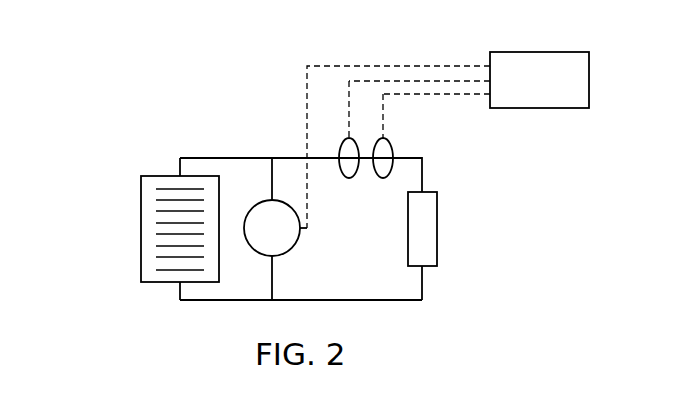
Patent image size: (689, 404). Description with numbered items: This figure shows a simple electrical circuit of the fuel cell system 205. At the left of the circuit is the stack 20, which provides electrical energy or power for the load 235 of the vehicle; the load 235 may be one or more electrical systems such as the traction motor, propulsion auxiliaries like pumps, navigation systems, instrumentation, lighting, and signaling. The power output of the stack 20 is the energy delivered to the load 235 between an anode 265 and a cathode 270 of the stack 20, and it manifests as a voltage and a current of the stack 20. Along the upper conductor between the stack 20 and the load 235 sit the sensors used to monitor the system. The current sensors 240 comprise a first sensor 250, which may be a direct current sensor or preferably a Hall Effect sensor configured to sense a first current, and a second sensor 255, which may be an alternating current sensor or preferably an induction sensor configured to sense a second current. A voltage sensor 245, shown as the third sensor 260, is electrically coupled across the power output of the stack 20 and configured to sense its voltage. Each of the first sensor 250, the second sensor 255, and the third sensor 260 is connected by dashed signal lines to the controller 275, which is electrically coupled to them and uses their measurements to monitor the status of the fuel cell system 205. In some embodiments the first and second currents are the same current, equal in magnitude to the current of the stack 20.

The fuel cell system 205 is at (124, 97).
The stack 20 is at (141, 200).
The anode 265 is at (180, 175).
The cathode 270 is at (180, 284).
The voltage sensor 245 is at (263, 197).
The third sensor 260 is at (290, 251).
The first sensor 250 is at (349, 178).
The second sensor 255 is at (383, 178).
The current sensor 240 is at (402, 150).
The load 235 is at (437, 222).
The controller 275 is at (564, 52).